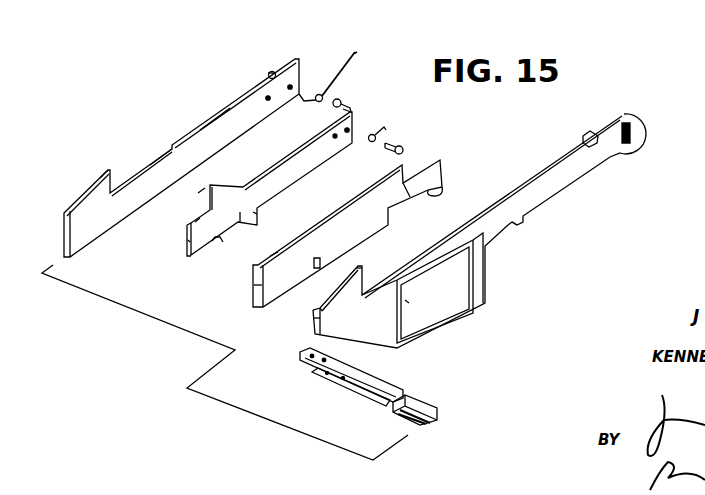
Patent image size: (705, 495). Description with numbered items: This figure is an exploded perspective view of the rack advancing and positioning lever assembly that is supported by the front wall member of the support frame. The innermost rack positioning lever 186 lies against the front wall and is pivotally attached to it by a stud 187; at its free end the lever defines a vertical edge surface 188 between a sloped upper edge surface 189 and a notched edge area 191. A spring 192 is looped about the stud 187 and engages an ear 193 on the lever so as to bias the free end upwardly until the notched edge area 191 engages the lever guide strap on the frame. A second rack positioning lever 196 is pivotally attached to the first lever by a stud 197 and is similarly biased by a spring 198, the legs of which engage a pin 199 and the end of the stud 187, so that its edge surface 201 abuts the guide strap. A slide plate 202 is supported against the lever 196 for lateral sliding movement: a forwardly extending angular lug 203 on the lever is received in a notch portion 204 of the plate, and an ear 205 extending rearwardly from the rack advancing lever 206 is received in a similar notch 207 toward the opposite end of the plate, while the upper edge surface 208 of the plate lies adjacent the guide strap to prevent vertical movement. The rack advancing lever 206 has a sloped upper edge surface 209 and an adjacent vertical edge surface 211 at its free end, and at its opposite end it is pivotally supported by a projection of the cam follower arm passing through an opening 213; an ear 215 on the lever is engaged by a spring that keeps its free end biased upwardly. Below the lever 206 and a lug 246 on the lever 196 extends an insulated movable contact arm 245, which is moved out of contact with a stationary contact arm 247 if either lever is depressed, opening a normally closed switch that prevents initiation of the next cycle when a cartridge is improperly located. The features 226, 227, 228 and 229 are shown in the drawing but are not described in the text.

The innermost rack positioning lever 186 is at (208, 126).
The stud 187 is at (346, 102).
The vertical edge surface 188 is at (109, 171).
The sloped upper edge surface 189 is at (76, 206).
The notched edge area 191 is at (150, 163).
The spring 192 is at (352, 57).
The ear 193 is at (273, 70).
The second rack positioning lever 196 is at (186, 249).
The stud 197 is at (400, 149).
The spring 198 is at (414, 121).
The pin 199 is at (332, 136).
The edge surface 201 is at (197, 218).
The slide plate 202 is at (255, 285).
The angular lug 203 is at (218, 244).
The notch portion 204 is at (277, 290).
The ear 205 is at (523, 227).
The rack advancing lever 206 is at (478, 278).
The notch 207 is at (410, 197).
The upper edge surface 208 is at (272, 253).
The sloped upper edge surface 209 is at (337, 281).
The vertical edge surface 211 is at (416, 304).
The opening 213 is at (634, 132).
The ear 215 is at (588, 134).
The bent tab 226 is at (200, 192).
The front plate 227 is at (389, 210).
The lug 228 is at (316, 264).
The hook 229 is at (456, 182).
The movable contact arm 245 is at (430, 403).
The lug 246 is at (256, 218).
The stationary contact arm 247 is at (398, 384).